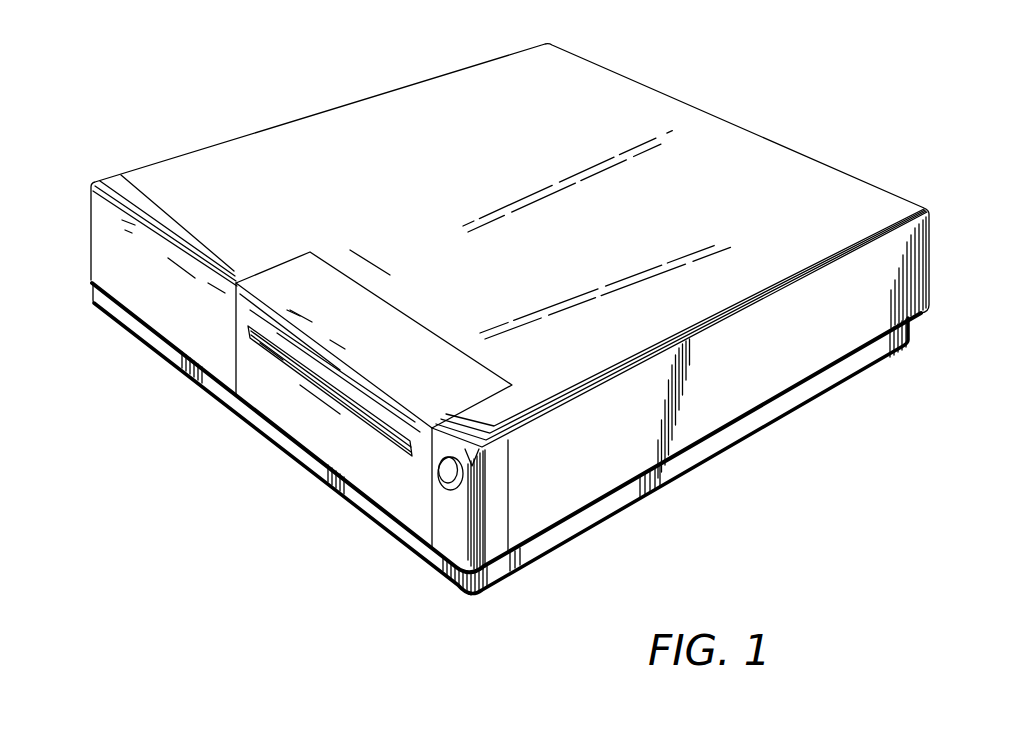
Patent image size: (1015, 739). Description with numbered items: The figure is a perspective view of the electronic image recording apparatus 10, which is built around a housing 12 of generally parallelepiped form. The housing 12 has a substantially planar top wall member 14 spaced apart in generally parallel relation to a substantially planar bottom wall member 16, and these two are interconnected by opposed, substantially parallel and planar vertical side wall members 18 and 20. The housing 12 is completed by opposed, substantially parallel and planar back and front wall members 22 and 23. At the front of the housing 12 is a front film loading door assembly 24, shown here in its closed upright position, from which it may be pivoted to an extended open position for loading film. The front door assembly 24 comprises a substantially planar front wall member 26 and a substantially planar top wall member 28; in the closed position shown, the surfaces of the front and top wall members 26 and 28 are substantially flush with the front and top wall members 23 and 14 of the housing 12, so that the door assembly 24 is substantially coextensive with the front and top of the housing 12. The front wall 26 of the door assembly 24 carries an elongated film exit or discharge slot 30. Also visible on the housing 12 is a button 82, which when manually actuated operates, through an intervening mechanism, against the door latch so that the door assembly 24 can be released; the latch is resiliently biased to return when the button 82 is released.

The electronic image recording apparatus 10 is at (287, 99).
The housing 12 is at (738, 114).
The top wall member 14 is at (600, 118).
The bottom wall member 16 is at (683, 475).
The side wall member 18 is at (860, 326).
The side wall member 20 is at (167, 160).
The back wall member 22 is at (930, 248).
The front wall member 23 is at (180, 328).
The front film loading door assembly 24 is at (365, 279).
The front wall member 26 is at (262, 377).
The top wall member 28 is at (397, 345).
The film exit or discharge slot 30 is at (327, 389).
The button 82 is at (447, 473).